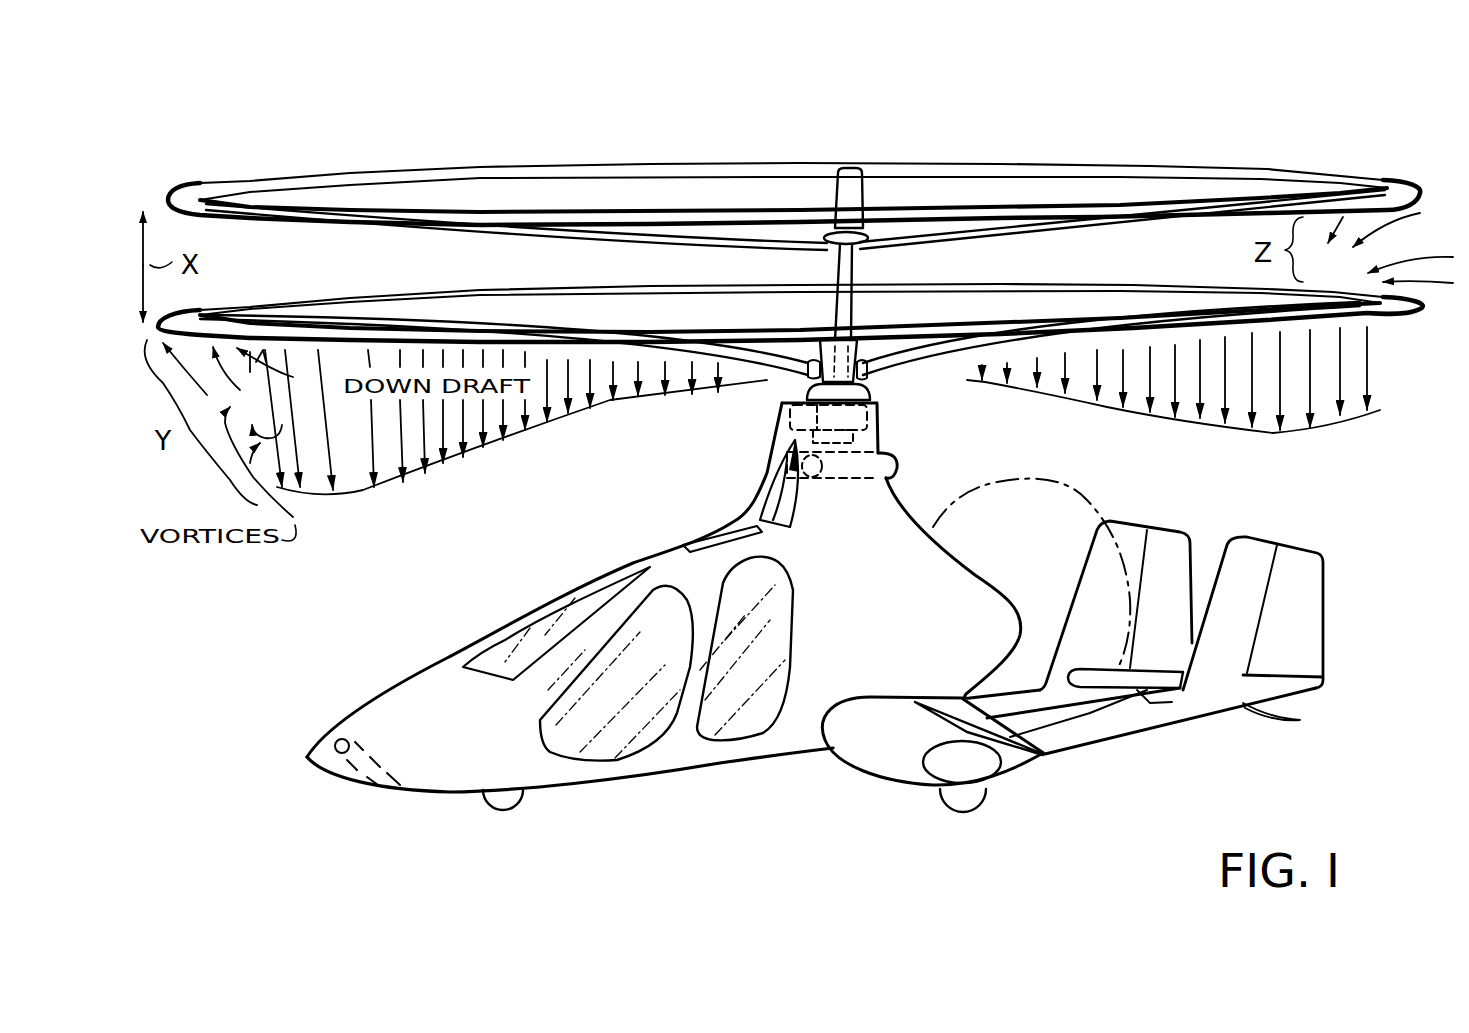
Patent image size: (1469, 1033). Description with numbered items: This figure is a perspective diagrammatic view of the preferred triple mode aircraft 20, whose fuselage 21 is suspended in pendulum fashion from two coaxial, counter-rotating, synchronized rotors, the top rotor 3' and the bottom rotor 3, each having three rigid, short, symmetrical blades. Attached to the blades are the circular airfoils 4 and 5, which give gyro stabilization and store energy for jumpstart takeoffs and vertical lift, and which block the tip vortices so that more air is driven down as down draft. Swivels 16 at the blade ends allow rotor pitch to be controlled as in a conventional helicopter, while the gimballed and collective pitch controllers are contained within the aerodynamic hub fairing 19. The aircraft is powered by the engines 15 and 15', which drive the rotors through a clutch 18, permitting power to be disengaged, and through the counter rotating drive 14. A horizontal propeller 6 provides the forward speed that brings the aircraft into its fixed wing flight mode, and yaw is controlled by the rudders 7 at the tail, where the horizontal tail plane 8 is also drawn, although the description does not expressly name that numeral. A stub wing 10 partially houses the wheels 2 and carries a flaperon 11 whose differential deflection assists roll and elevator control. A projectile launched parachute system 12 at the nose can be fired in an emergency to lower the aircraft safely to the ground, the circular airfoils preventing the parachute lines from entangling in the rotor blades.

The wheels 2 is at (497, 800).
The bottom rotor 3 is at (780, 369).
The top rotor 3' is at (795, 228).
The circular airfoil 4 is at (450, 283).
The circular airfoil 5 is at (1363, 163).
The horizontal propeller 6 is at (1040, 476).
The rudders 7 is at (1179, 525).
The horizontal stabilizer 8 is at (1100, 660).
The stub wing 10 is at (864, 761).
The flaperon 11 is at (971, 724).
The projectile launched parachute system 12 is at (340, 772).
The counter rotating drive 14 is at (877, 410).
The engine 15 is at (742, 483).
The engine 15' is at (827, 507).
The swivel 16 is at (858, 167).
The clutch 18 is at (880, 427).
The aerodynamic hub fairing 19 is at (877, 510).
The aircraft 20 is at (285, 655).
The fuselage 21 is at (720, 763).